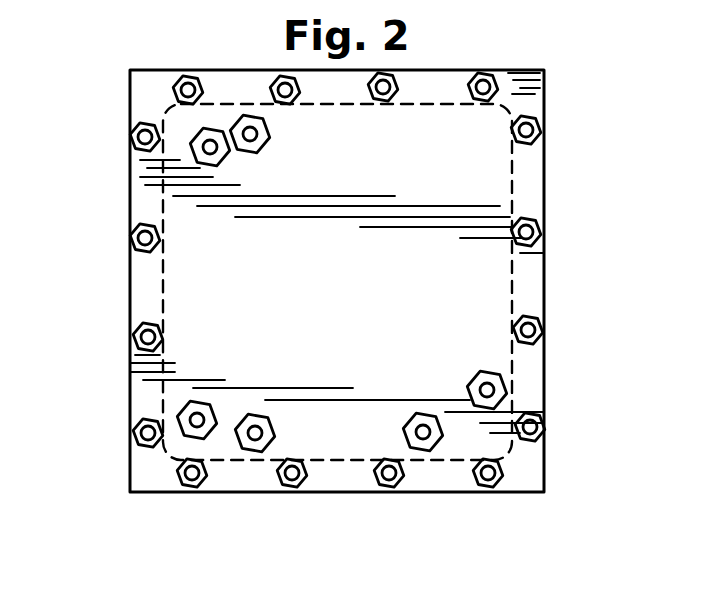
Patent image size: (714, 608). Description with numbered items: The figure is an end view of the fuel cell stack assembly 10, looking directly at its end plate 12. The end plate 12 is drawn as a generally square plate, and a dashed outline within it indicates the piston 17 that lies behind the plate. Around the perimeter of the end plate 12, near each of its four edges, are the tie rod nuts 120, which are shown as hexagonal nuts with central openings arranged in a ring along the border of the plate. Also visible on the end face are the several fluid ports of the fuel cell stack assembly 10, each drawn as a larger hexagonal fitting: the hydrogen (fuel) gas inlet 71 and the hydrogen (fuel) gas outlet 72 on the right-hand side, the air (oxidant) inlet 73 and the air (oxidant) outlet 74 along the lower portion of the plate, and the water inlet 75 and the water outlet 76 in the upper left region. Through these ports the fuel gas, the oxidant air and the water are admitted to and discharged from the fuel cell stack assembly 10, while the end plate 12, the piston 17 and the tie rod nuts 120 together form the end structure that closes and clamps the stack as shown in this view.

The fuel cell stack assembly 10 is at (155, 507).
The end plate 12 is at (544, 84).
The piston 17 is at (172, 106).
The tie rod nuts 120 is at (278, 78).
The hydrogen gas inlet 71 is at (430, 432).
The hydrogen gas outlet 72 is at (487, 383).
The air inlet 73 is at (270, 440).
The air outlet 74 is at (185, 434).
The water inlet 75 is at (217, 150).
The water outlet 76 is at (257, 134).